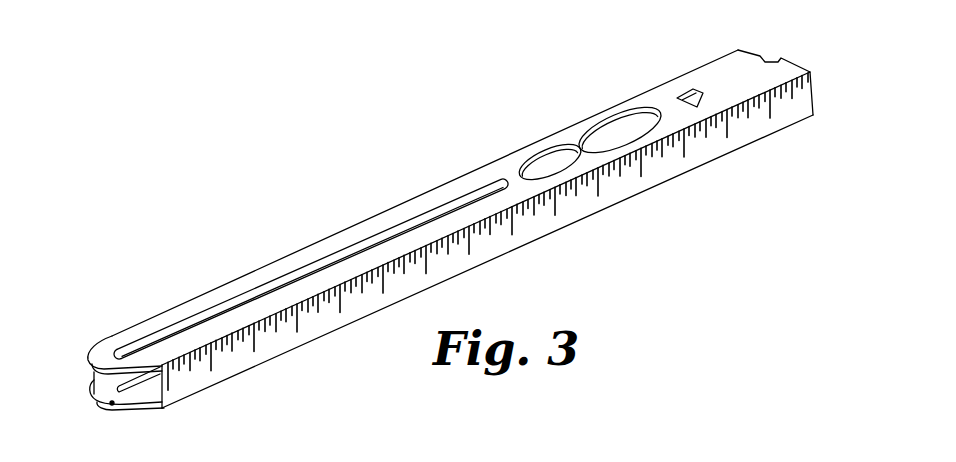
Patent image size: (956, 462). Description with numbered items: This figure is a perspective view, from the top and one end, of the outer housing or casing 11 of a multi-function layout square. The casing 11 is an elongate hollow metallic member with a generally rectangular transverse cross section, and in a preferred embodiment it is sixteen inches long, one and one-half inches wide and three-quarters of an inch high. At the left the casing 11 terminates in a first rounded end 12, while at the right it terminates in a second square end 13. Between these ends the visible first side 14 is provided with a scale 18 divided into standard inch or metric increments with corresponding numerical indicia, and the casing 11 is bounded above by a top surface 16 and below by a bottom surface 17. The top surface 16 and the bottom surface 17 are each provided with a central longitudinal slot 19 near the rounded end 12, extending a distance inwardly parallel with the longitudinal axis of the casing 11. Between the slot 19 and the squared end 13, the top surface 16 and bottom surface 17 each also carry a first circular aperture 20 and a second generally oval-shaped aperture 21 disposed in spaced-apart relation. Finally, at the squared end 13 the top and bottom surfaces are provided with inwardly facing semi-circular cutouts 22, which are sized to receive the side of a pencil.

The outer housing or casing 11 is at (243, 208).
The first rounded end 12 is at (88, 355).
The second square end 13 is at (742, 50).
The first side 14 is at (530, 228).
The top surface 16 is at (340, 235).
The bottom surface 17 is at (285, 354).
The scale 18 is at (640, 167).
The central longitudinal slot 19 is at (160, 334).
The first circular aperture 20 is at (533, 150).
The second generally oval-shaped aperture 21 is at (604, 120).
The semi-circular cutout 22 is at (769, 61).